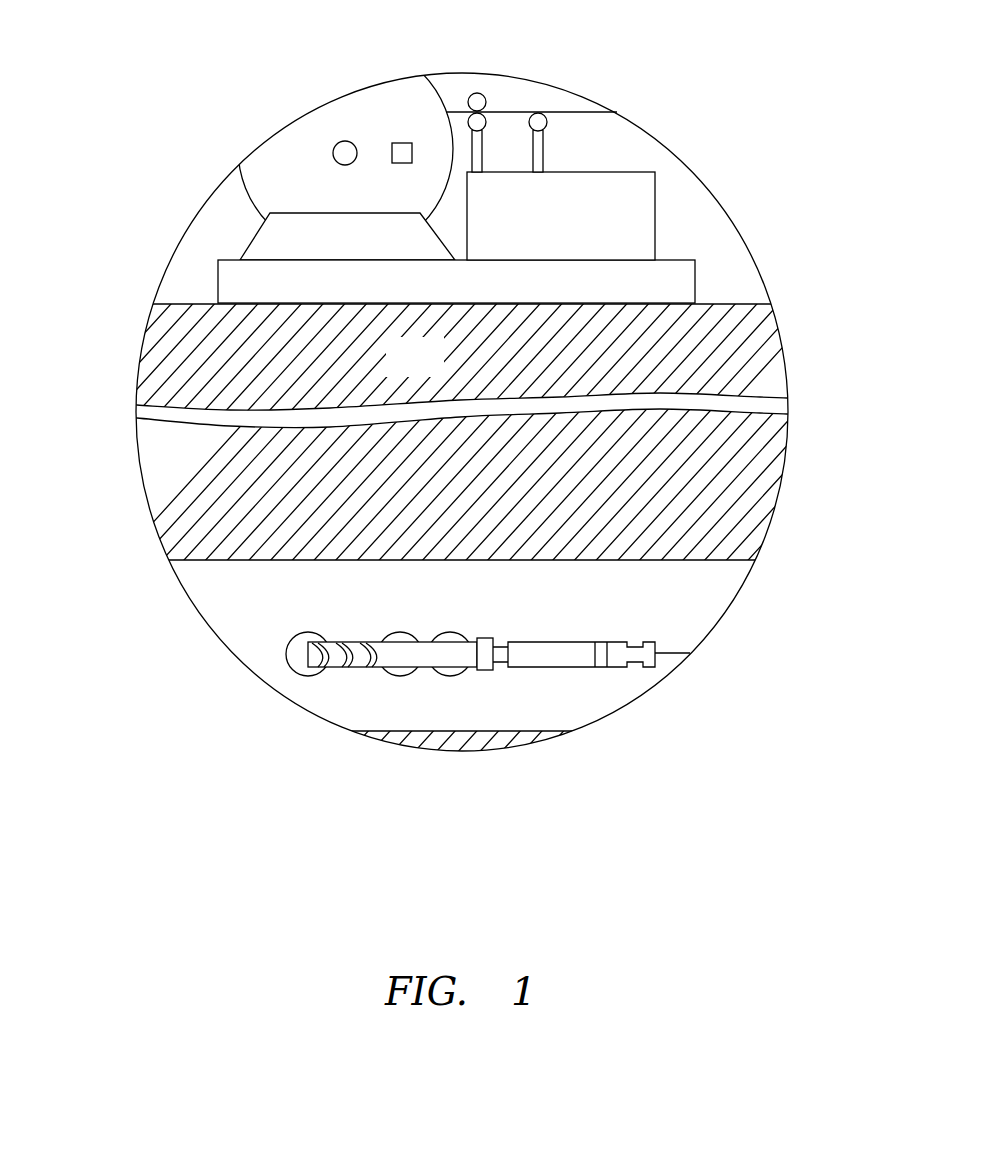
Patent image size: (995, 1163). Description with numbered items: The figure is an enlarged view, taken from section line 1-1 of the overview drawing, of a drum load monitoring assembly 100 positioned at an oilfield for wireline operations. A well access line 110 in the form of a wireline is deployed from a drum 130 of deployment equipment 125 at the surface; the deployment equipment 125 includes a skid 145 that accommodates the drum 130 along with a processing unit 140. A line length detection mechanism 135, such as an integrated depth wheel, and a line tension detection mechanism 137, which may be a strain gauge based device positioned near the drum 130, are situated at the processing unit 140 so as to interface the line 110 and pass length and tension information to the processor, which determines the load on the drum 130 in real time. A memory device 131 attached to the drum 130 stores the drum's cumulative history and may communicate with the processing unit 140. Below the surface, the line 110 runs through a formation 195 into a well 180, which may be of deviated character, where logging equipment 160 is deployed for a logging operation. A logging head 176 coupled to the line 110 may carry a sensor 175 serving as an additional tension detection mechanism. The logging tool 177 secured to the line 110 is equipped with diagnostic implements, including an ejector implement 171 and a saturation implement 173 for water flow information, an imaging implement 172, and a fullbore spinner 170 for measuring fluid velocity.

The drum load monitoring assembly 100 is at (198, 38).
The well access line 110 is at (580, 112).
The deployment equipment 125 is at (210, 207).
The drum 130 is at (418, 92).
The memory device 131 is at (397, 142).
The line length detection mechanism 135 is at (477, 148).
The line tension detection mechanism 137 is at (538, 138).
The processing unit 140 is at (640, 222).
The skid 145 is at (230, 277).
The formation 195 is at (435, 372).
The section line 1-1 is at (130, 437).
The logging equipment 160 is at (412, 578).
The well 180 is at (277, 613).
The fullbore spinner 170 is at (295, 657).
The ejector implement 171 is at (332, 670).
The imaging implement 172 is at (413, 672).
The saturation implement 173 is at (467, 672).
The sensor 175 is at (603, 662).
The logging head 176 is at (590, 630).
The logging tool 177 is at (388, 693).